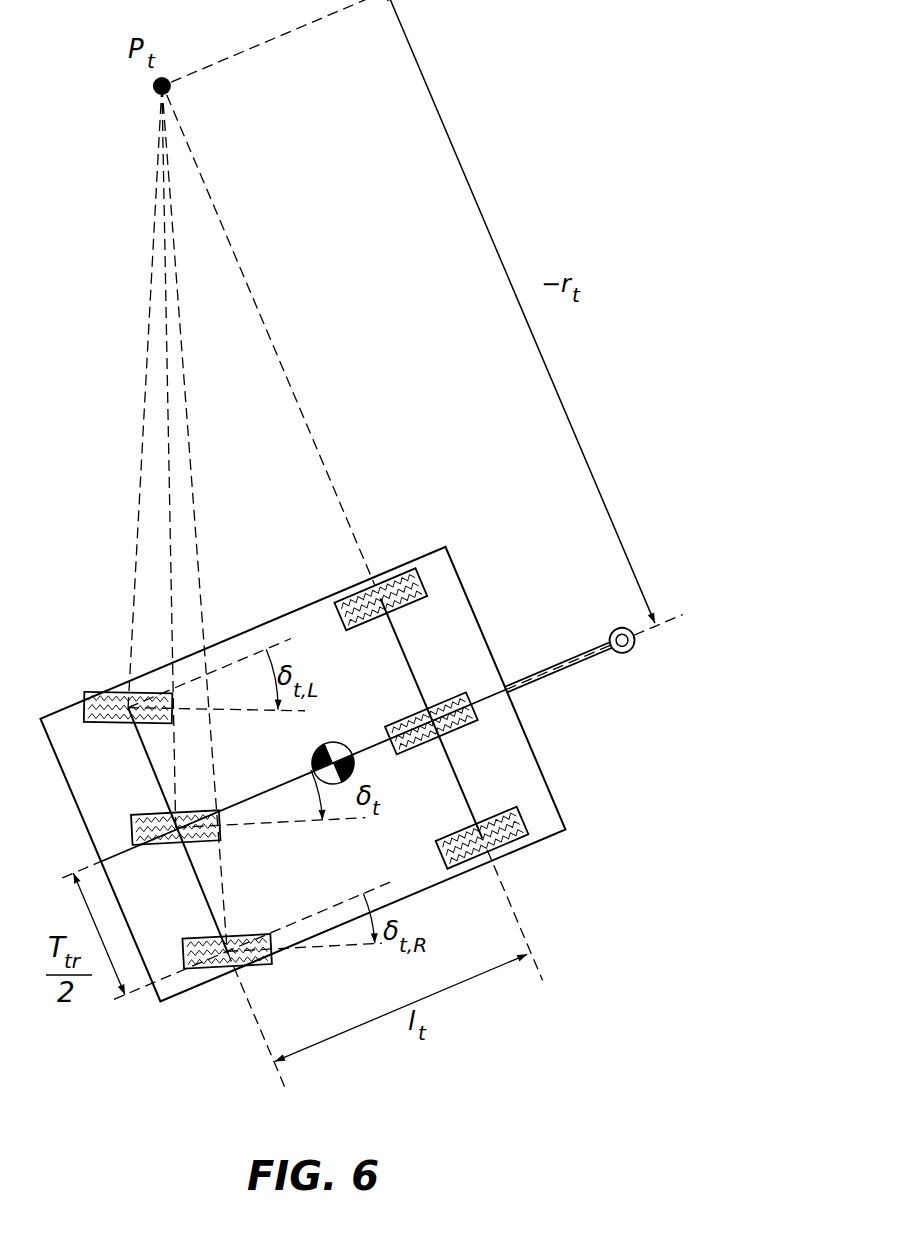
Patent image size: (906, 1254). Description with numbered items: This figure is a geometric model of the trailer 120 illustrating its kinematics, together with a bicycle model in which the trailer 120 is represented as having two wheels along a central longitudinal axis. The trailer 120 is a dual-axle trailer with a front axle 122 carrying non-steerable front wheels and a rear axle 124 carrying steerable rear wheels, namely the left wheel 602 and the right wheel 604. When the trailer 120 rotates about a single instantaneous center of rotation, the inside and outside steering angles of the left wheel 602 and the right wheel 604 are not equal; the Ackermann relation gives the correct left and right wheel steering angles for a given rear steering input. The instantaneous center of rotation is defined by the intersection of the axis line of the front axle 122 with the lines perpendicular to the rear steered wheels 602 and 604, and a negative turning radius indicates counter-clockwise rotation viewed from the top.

The trailer 120 is at (366, 809).
The front axle 122 is at (410, 668).
The rear axle 124 is at (197, 872).
The left wheel 602 is at (100, 691).
The right wheel 604 is at (262, 967).